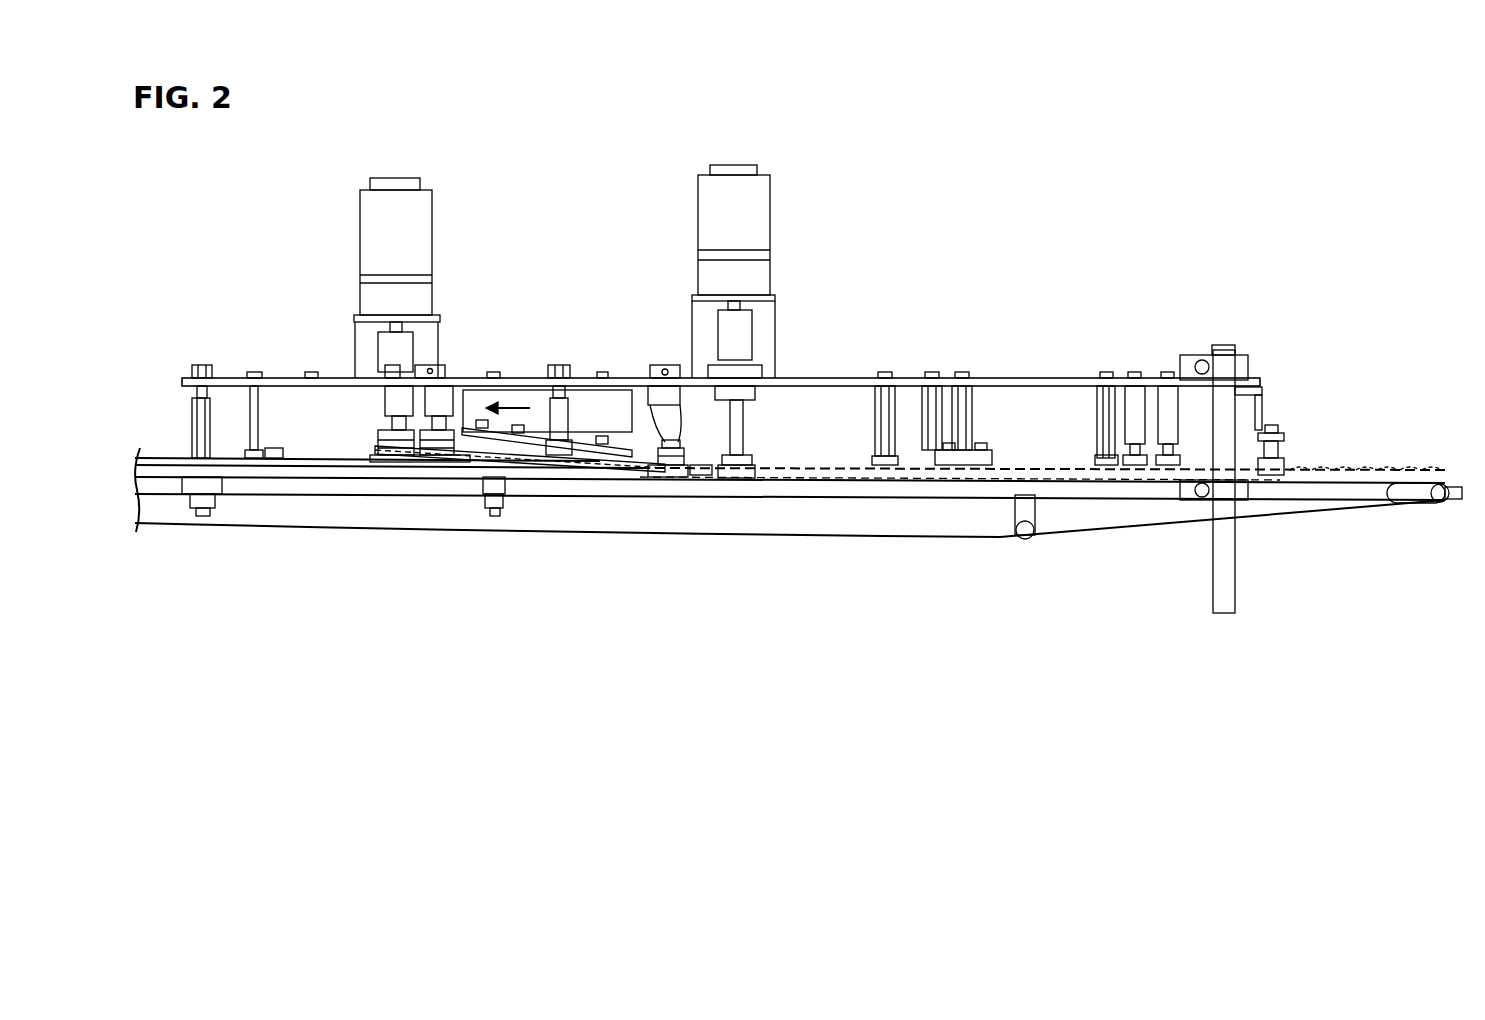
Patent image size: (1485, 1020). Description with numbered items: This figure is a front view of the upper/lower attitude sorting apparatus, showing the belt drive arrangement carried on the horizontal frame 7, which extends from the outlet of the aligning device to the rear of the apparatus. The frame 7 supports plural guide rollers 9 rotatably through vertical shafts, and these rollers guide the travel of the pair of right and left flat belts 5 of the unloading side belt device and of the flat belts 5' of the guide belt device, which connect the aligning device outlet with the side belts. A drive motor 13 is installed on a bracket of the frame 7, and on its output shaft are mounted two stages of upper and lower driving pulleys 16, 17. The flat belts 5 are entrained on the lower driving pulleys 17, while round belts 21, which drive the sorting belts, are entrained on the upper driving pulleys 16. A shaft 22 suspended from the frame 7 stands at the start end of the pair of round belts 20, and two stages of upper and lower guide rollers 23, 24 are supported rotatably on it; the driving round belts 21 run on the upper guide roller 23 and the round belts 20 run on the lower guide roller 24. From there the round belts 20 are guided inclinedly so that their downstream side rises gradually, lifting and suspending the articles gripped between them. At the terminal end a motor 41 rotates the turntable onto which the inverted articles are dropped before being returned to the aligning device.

The flat belts 5 is at (798, 524).
The flat belts 5' is at (1276, 406).
The horizontal frame 7 is at (1160, 490).
The guide rollers 9 is at (1105, 425).
The drive motor 13 is at (752, 212).
The upper driving pulleys 16 is at (752, 462).
The lower driving pulleys 17 is at (737, 478).
The round belts 20 is at (555, 460).
The round belts 21 is at (705, 470).
The shaft 22 is at (663, 443).
The upper guide roller 23 is at (672, 448).
The lower guide roller 24 is at (665, 468).
The motor 41 is at (418, 226).